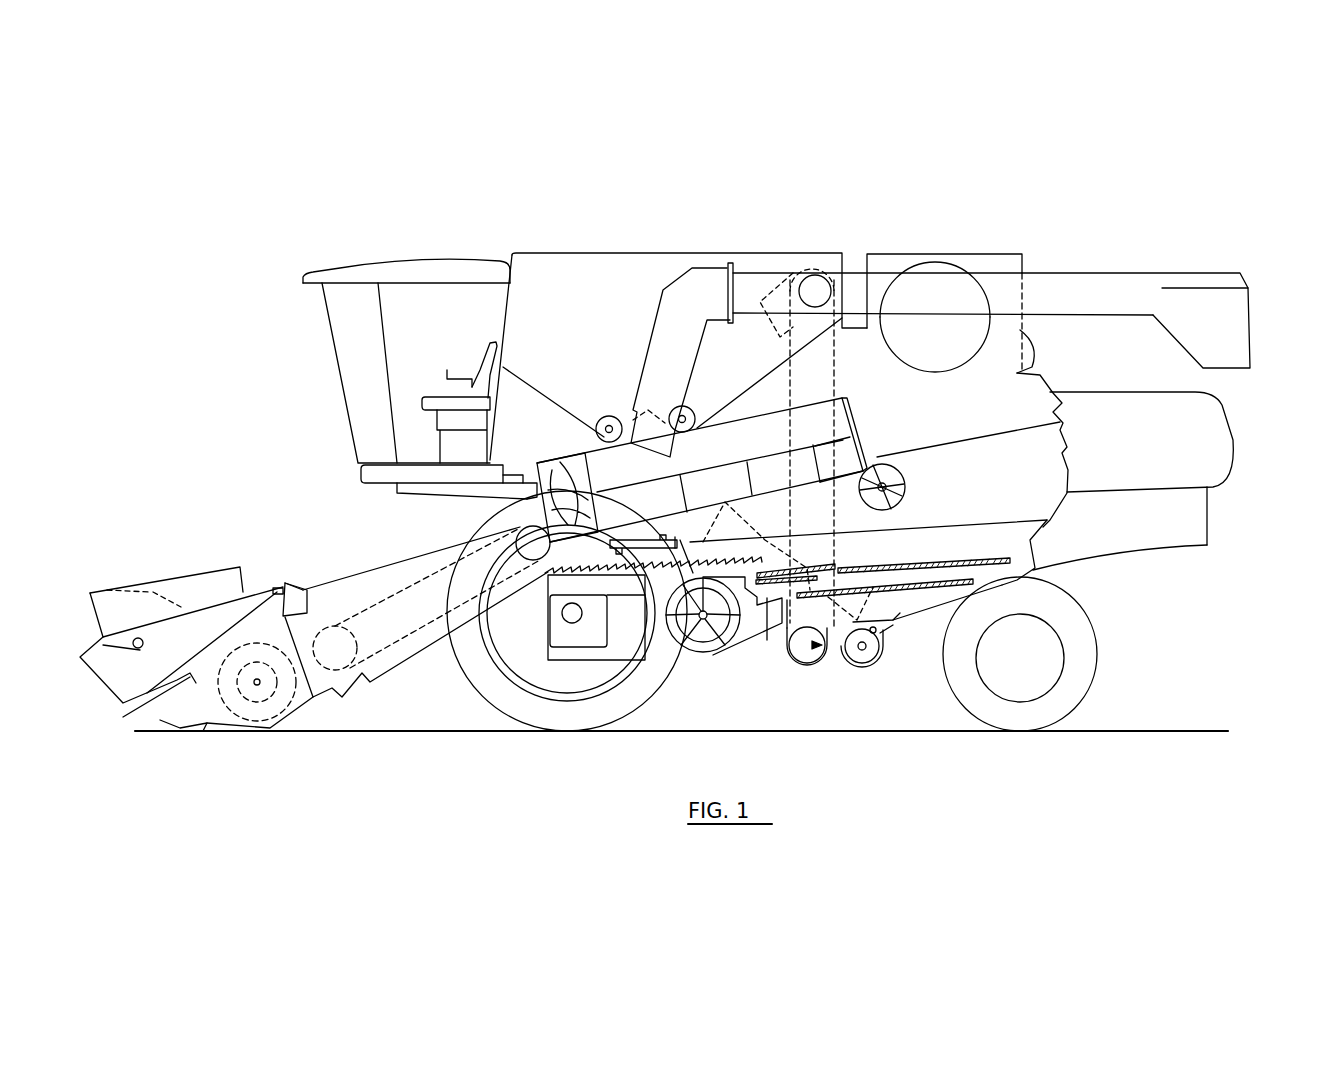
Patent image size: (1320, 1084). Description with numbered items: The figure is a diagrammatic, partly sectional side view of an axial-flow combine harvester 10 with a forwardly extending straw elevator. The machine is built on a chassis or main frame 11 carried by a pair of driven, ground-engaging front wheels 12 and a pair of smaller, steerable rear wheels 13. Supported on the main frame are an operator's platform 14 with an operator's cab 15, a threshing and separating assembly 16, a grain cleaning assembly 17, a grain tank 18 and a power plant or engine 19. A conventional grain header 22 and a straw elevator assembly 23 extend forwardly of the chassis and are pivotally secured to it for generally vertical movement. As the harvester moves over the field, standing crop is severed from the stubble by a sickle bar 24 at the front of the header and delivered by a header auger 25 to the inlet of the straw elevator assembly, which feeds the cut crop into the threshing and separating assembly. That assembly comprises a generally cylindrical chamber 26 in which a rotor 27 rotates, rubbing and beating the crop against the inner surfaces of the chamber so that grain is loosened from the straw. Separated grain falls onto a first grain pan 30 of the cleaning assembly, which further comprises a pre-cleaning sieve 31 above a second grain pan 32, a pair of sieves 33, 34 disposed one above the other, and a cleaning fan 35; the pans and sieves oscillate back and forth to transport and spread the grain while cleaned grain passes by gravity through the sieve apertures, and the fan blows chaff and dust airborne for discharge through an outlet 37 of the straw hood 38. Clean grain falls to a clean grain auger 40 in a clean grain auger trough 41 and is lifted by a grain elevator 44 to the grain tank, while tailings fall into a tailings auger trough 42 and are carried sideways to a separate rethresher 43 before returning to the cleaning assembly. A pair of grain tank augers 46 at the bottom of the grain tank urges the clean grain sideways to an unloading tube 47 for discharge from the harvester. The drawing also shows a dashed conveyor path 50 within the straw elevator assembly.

The combine harvester 10 is at (384, 212).
The chassis or main frame 11 is at (1033, 572).
The front wheels 12 is at (458, 650).
The rear wheels 13 is at (1083, 692).
The operator's platform 14 is at (370, 473).
The operator's cab 15 is at (345, 362).
The threshing and separating assembly 16 is at (474, 507).
The grain cleaning assembly 17 is at (752, 685).
The grain tank 18 is at (595, 258).
The power plant or engine 19 is at (938, 262).
The grain header 22 is at (168, 550).
The straw elevator assembly 23 is at (330, 600).
The sickle bar 24 is at (188, 733).
The header auger 25 is at (257, 703).
The cylindrical chamber 26 is at (765, 433).
The rotor 27 is at (548, 526).
The first grain pan 30 is at (548, 580).
The pre-cleaning sieve 31 is at (847, 567).
The second grain pan 32 is at (771, 600).
The sieve 33 is at (933, 593).
The sieve 34 is at (900, 605).
The cleaning fan 35 is at (708, 638).
The outlet 37 is at (1126, 575).
The straw hood 38 is at (1210, 440).
The clean grain auger 40 is at (800, 652).
The clean grain auger trough 41 is at (817, 665).
The tailings auger trough 42 is at (858, 663).
The rethresher 43 is at (870, 652).
The grain elevator 44 is at (830, 378).
The grain tank augers 46 is at (608, 416).
The unloading tube 47 is at (1073, 278).
The feeder conveyor chain 50 is at (398, 566).